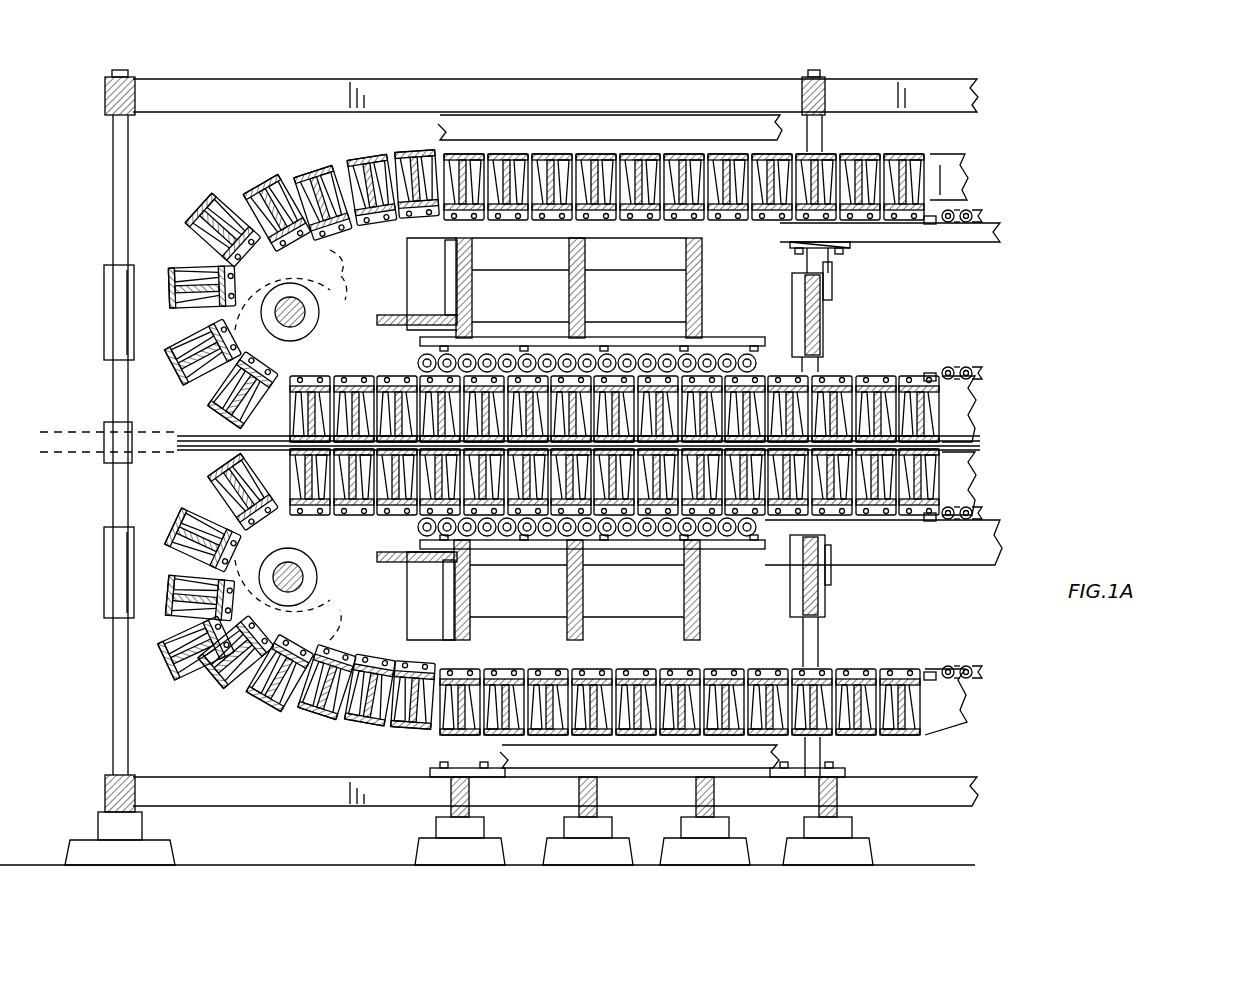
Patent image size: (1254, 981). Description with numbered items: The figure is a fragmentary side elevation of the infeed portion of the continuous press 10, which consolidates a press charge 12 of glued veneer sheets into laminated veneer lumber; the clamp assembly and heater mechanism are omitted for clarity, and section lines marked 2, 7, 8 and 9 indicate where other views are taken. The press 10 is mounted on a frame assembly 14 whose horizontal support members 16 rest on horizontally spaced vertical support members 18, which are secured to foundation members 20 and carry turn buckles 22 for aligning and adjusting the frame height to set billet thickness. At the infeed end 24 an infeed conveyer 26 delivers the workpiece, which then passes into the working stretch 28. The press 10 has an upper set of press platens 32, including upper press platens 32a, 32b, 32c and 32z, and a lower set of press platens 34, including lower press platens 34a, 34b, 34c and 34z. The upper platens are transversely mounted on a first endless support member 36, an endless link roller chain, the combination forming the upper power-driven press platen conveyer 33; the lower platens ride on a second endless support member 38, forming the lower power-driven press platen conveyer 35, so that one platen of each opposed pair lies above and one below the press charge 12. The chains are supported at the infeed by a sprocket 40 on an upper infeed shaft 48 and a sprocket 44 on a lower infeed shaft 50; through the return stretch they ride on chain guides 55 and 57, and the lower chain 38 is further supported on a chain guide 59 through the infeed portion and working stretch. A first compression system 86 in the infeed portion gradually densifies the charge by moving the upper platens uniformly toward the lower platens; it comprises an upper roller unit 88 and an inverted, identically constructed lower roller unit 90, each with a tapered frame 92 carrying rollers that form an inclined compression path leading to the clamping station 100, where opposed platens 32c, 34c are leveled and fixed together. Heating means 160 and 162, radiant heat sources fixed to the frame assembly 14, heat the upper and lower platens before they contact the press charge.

The continuous press 10 is at (895, 72).
The press charge 12 is at (176, 449).
The frame assembly 14 is at (592, 275).
The horizontal support member 16 is at (104, 296).
The vertical support member 18 is at (818, 655).
The foundation member 20 is at (495, 860).
The turn buckle 22 is at (100, 438).
The infeed end 24 is at (113, 467).
The infeed conveyer 26 is at (158, 435).
The working stretch 28 is at (1060, 438).
The upper set of press platens 32 is at (675, 386).
The upper press platen 32a is at (240, 385).
The upper press platen 32b is at (680, 395).
The upper press platen 32c is at (760, 395).
The upper press platen 32z is at (296, 205).
The upper power-driven press platen conveyer 33 is at (185, 235).
The lower set of press platens 34 is at (600, 607).
The lower press platen 34a is at (238, 492).
The lower press platen 34b is at (680, 495).
The lower press platen 34c is at (760, 495).
The lower press platen 34z is at (292, 700).
The lower power-driven press platen conveyer 35 is at (182, 642).
The first endless support member 36 is at (965, 210).
The second endless support member 38 is at (975, 512).
The sprocket 40 is at (345, 265).
The sprocket 44 is at (320, 610).
The upper infeed shaft 48 is at (320, 305).
The lower infeed shaft 50 is at (325, 628).
The chain guide 55 is at (948, 248).
The chain guide 57 is at (950, 668).
The chain guide 59 is at (930, 570).
The first compression system 86 is at (603, 300).
The upper roller unit 88 is at (418, 360).
The lower roller unit 90 is at (418, 540).
The tapered frame 92 is at (545, 338).
The clamping station 100 is at (818, 265).
The heating means 160 is at (715, 115).
The heating means 162 is at (648, 772).
The section line 2 is at (320, 68).
The section line 7 is at (680, 290).
The section line 8 is at (750, 305).
The section line 9 is at (770, 258).